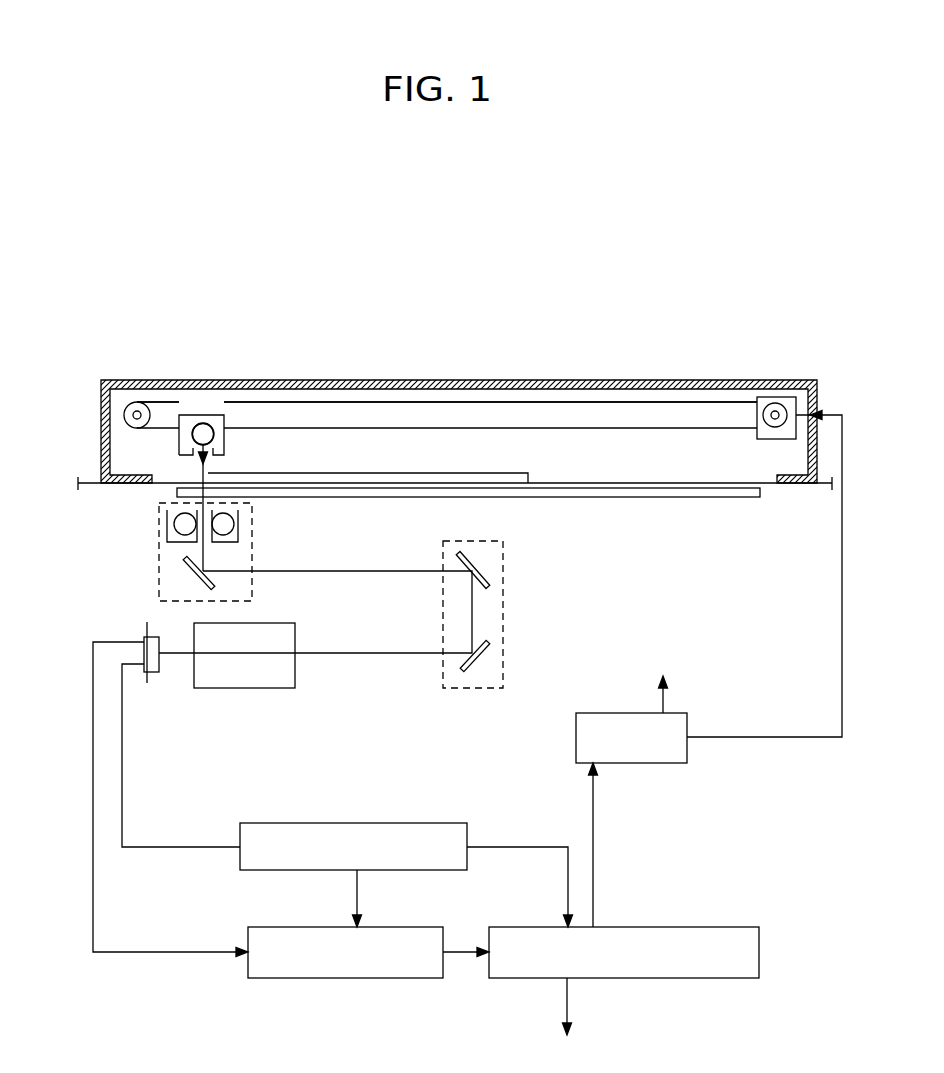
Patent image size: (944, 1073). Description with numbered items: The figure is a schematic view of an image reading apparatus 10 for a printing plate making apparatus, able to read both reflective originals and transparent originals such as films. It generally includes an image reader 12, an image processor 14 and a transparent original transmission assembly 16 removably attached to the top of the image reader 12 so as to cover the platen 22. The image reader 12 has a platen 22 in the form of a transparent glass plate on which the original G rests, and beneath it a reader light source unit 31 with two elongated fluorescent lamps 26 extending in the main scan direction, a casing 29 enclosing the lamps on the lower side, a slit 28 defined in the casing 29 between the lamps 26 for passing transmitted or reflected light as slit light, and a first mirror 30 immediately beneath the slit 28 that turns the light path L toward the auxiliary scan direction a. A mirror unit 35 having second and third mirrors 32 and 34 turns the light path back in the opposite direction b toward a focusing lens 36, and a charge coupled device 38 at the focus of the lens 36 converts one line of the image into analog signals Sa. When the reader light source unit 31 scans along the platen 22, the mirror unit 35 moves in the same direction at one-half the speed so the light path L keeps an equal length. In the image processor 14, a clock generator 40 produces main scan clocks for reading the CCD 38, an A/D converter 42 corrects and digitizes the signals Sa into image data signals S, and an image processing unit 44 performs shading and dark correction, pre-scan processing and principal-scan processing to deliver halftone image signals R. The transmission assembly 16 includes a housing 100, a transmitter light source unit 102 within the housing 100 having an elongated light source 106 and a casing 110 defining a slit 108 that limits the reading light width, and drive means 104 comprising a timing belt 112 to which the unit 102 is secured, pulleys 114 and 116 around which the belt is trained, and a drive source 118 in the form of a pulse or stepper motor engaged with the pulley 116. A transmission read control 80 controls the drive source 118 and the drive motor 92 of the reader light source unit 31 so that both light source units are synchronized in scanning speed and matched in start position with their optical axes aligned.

The image reading apparatus 10 is at (258, 232).
The image reader 12 is at (676, 590).
The image processor 14 is at (700, 911).
The transparent original transmission assembly 16 is at (338, 353).
The platen 22 is at (657, 497).
The fluorescent lamps 26 is at (213, 532).
The slit 28 is at (210, 548).
The casing 29 is at (234, 528).
The first mirror 30 is at (190, 580).
The reader light source unit 31 is at (159, 562).
The second mirror 32 is at (478, 570).
The third mirror 34 is at (480, 655).
The mirror unit 35 is at (503, 618).
The focusing lens 36 is at (263, 688).
The charge coupled device 38 is at (153, 677).
The clock generator 40 is at (357, 823).
The A/D converter 42 is at (347, 978).
The image processing unit 44 is at (622, 927).
The transmission read control 80 is at (614, 753).
The drive motor 92 is at (665, 678).
The housing 100 is at (680, 380).
The transmitter light source unit 102 is at (241, 414).
The drive means 104 is at (720, 392).
The elongated light source 106 is at (208, 425).
The slit 108 is at (225, 463).
The casing 110 is at (187, 416).
The timing belt 112 is at (428, 402).
The pulley 114 is at (130, 403).
The pulley 116 is at (777, 403).
The drive source 118 is at (789, 440).